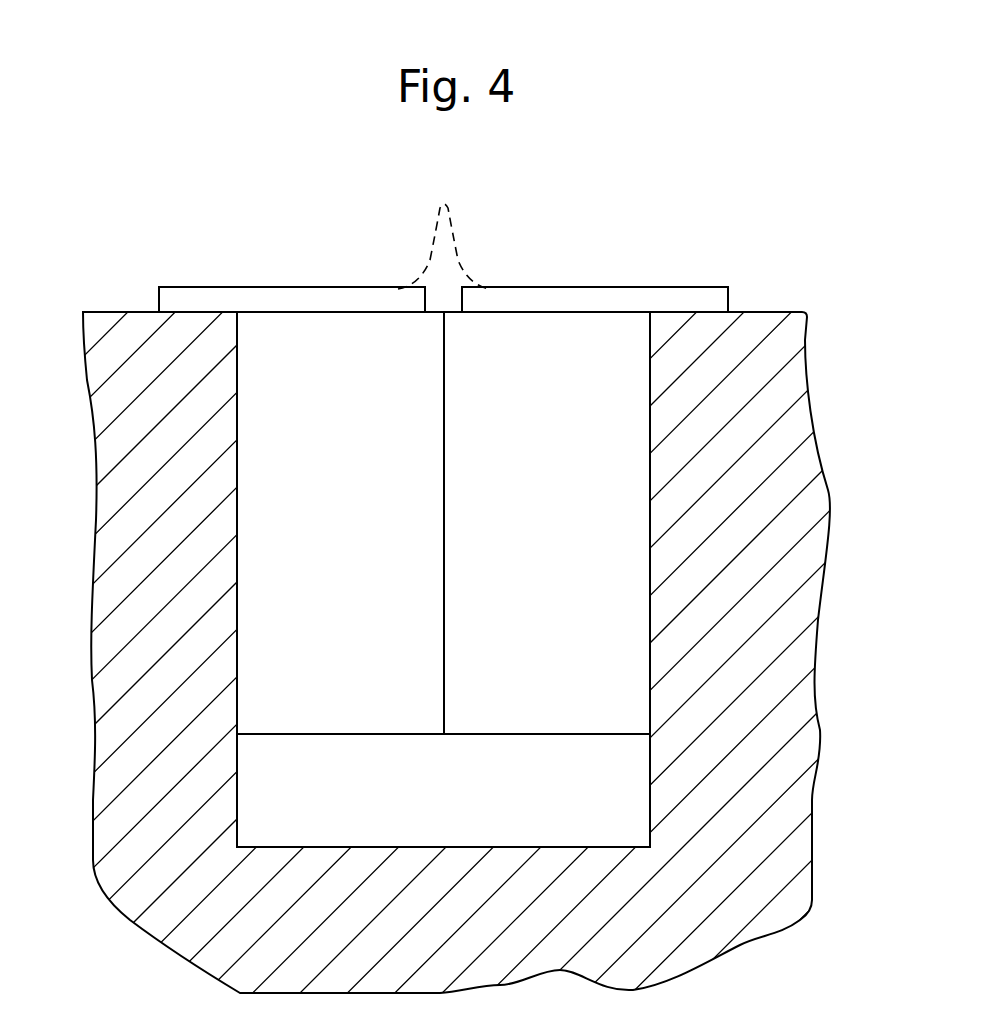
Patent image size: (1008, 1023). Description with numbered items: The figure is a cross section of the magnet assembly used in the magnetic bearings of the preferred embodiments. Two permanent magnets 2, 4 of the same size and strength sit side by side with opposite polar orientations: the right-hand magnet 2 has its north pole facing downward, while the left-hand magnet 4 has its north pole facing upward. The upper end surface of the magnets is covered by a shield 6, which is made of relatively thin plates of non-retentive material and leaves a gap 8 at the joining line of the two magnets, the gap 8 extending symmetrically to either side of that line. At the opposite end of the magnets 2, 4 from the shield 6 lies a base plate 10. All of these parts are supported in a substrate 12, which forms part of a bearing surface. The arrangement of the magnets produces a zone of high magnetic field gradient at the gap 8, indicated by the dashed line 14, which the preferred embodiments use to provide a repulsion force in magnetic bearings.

The permanent magnet 2 is at (555, 532).
The permanent magnet 4 is at (345, 532).
The shield 6 is at (300, 297).
The gap 8 is at (445, 292).
The base plate 10 is at (615, 798).
The substrate 12 is at (167, 573).
The dashed line 14 is at (444, 203).